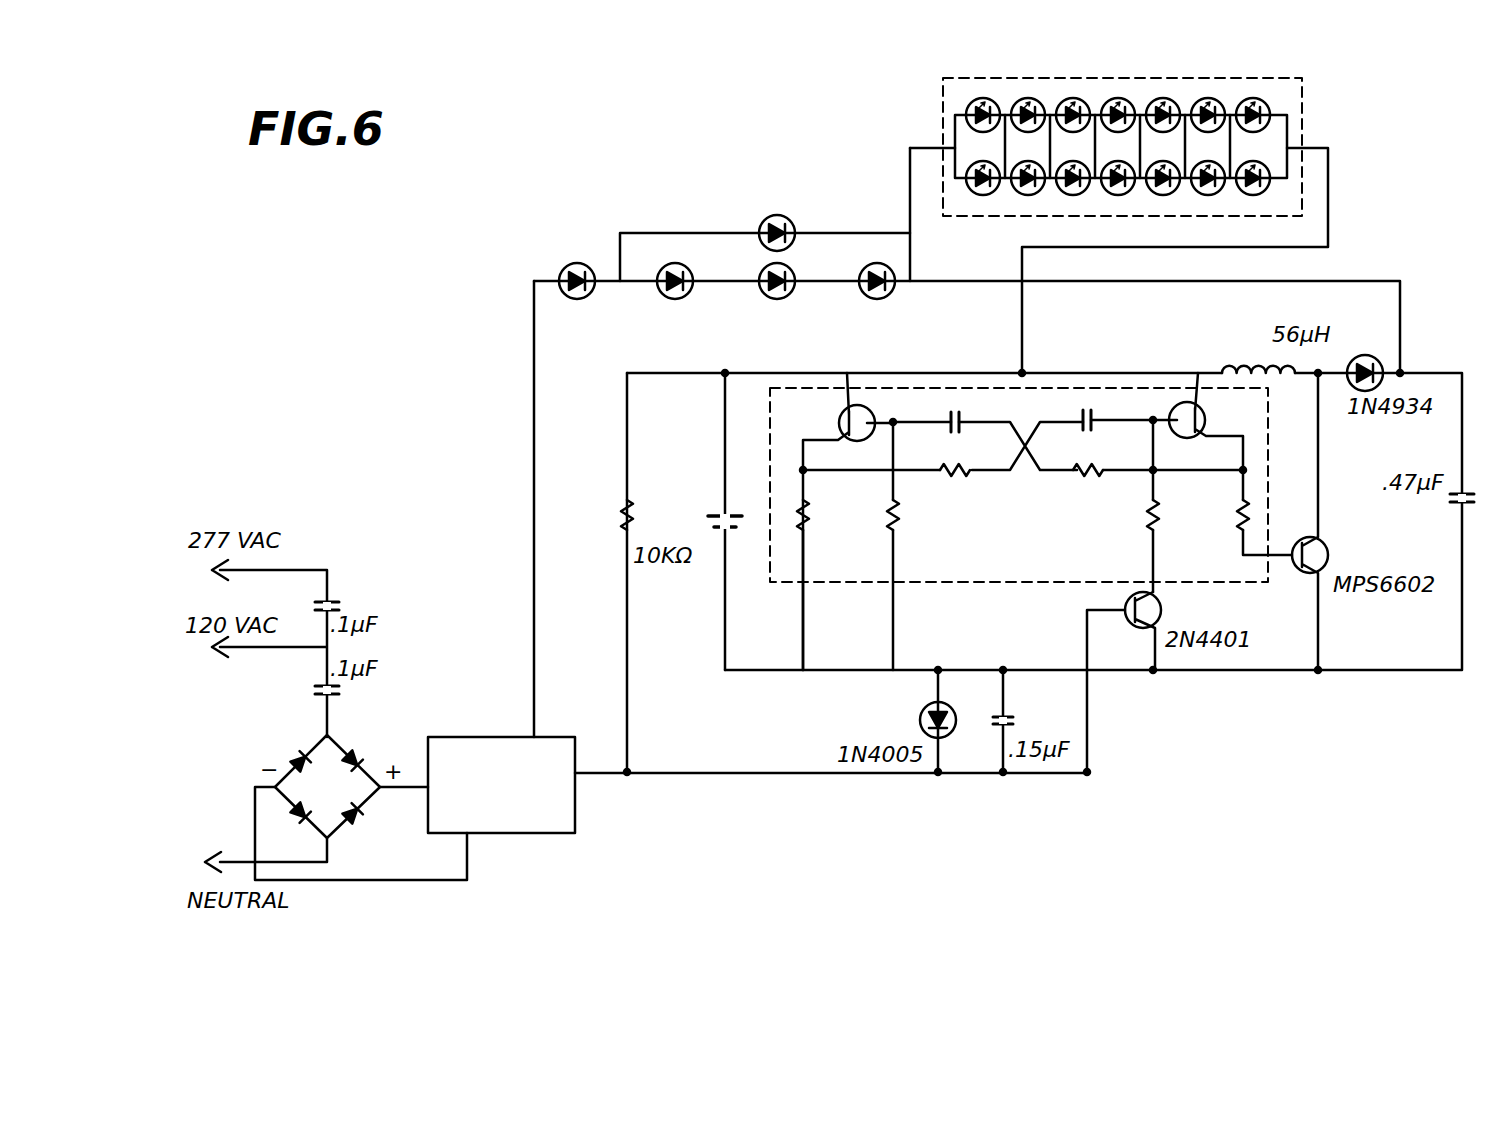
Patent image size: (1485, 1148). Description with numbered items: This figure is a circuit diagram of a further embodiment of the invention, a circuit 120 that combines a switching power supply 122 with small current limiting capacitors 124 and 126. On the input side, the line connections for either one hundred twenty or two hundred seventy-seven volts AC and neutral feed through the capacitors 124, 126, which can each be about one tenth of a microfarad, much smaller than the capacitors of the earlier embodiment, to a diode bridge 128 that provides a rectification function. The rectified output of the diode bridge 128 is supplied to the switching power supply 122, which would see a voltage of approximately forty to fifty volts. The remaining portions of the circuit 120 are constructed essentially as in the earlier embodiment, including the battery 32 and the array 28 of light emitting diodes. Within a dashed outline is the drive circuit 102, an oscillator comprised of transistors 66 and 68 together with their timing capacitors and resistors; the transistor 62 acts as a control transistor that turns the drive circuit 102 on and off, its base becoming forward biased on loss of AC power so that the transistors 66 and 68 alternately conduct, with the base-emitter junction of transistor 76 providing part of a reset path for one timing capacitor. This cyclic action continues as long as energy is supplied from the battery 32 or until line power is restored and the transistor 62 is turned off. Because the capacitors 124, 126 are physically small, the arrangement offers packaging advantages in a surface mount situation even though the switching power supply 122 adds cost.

The circuit 120 is at (657, 133).
The array of light emitting diodes 28 is at (1303, 92).
The transistor 66 is at (858, 403).
The transistor 68 is at (1184, 402).
The battery 32 is at (710, 518).
The transistor 76 is at (1332, 539).
The control transistor 62 is at (1176, 606).
The drive circuit 102 is at (1018, 494).
The capacitor 124 is at (352, 590).
The capacitor 126 is at (312, 697).
The diode bridge 128 is at (376, 740).
The switching power supply 122 is at (545, 833).